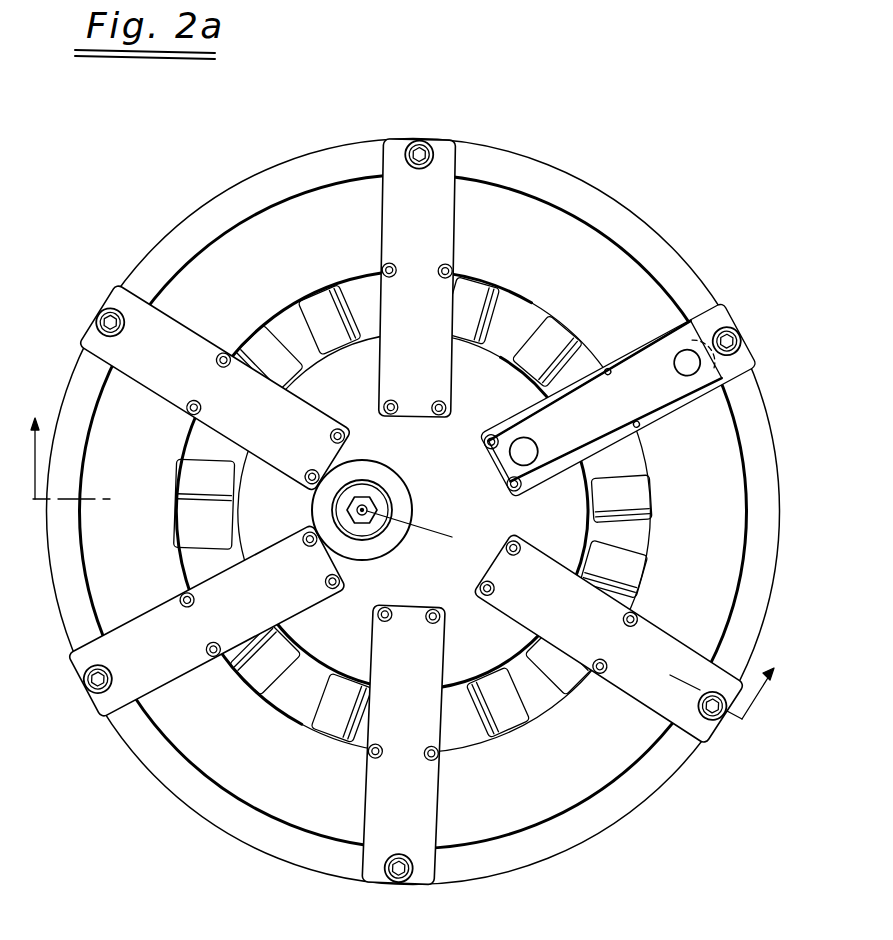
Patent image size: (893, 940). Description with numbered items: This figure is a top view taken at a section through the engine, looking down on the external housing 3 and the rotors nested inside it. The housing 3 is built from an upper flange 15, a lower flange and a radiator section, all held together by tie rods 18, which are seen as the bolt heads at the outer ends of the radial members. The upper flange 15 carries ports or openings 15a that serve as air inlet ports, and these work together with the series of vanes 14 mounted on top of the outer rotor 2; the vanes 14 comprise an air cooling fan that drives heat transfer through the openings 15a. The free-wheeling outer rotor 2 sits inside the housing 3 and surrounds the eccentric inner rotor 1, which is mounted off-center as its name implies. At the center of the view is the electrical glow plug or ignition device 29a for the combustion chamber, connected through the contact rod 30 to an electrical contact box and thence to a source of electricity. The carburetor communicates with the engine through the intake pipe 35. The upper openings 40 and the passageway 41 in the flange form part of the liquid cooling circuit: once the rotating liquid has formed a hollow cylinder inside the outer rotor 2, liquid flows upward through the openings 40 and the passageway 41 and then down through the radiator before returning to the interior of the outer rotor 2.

The eccentric inner rotor 1 is at (192, 469).
The outer rotor 2 is at (403, 555).
The external housing 3 is at (676, 238).
The vanes 14 is at (330, 318).
The upper flange 15 is at (214, 834).
The ports or openings 15a is at (540, 306).
The tie rods 18 is at (738, 338).
The electrical glow plug or ignition device 29a is at (362, 523).
The contact rod 30 is at (369, 497).
The intake pipe 35 is at (392, 495).
The upper openings 40 is at (683, 368).
The passageway 41 is at (648, 404).